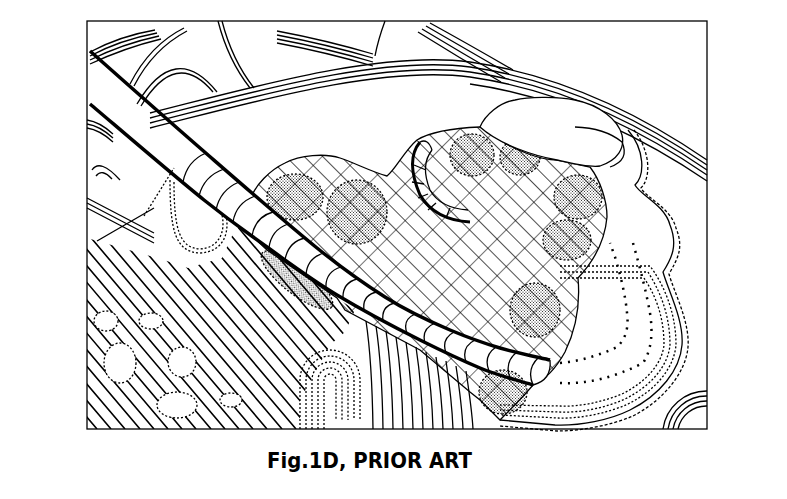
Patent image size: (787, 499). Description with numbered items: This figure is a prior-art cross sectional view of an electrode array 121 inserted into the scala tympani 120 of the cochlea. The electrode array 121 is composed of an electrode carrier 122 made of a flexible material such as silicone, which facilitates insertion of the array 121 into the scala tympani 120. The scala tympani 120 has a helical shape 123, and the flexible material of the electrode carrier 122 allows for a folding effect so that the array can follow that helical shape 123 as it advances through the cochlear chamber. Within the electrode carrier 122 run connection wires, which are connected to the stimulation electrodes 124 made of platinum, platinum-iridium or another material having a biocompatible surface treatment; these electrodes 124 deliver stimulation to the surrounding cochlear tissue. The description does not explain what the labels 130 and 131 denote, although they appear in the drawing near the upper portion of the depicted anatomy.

The scala tympani 120 is at (508, 415).
The electrode array 121 is at (345, 307).
The electrode carrier 122 is at (197, 200).
The helical shape 123 is at (707, 113).
The stimulation electrodes 124 is at (272, 247).
The bladder neck 130 is at (523, 157).
The bladder 131 is at (590, 93).